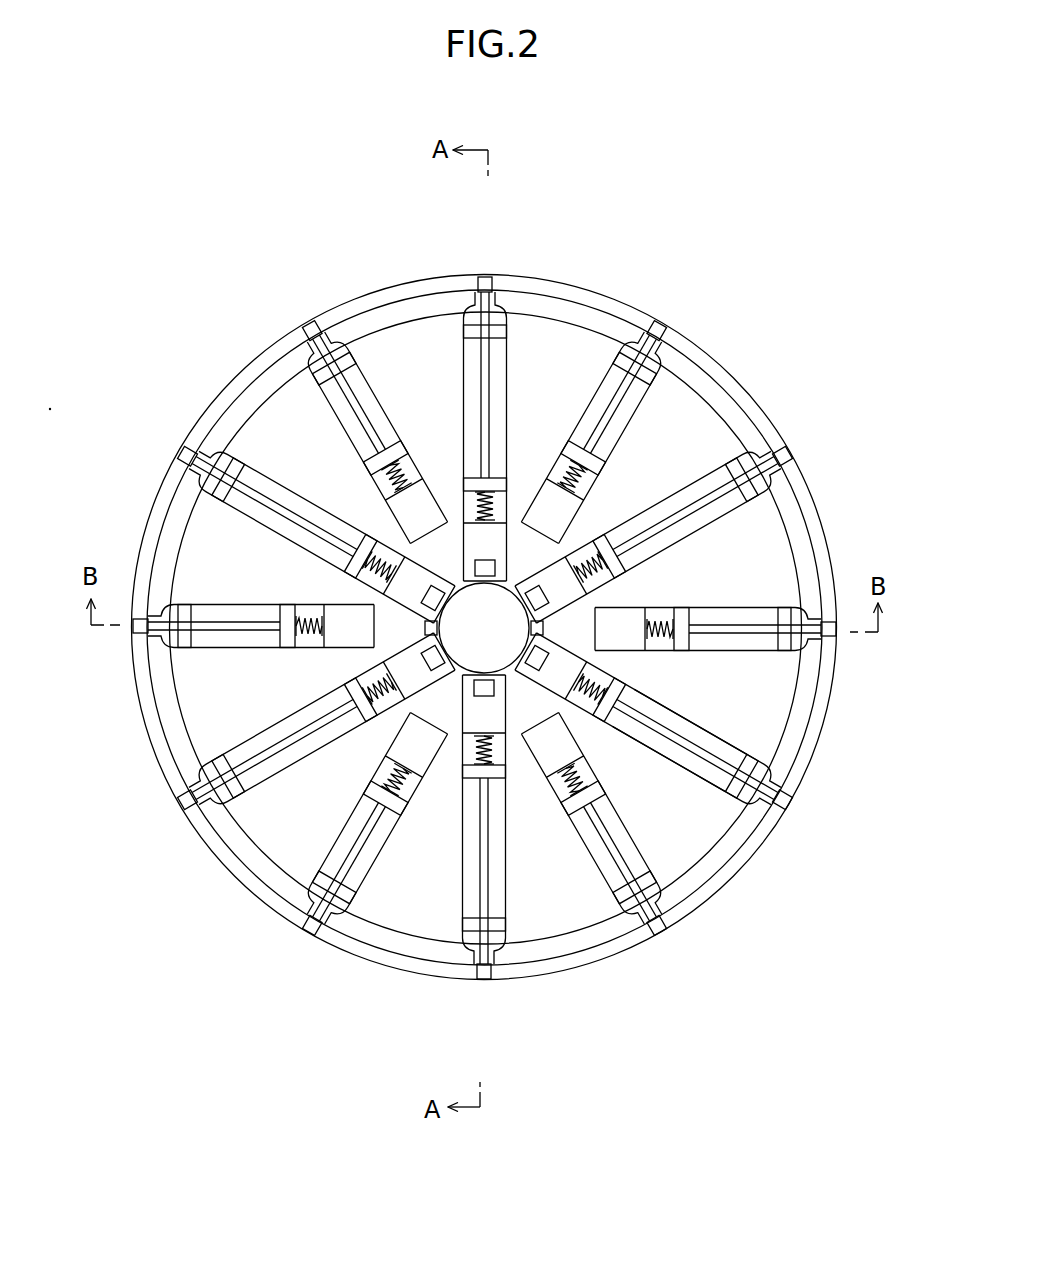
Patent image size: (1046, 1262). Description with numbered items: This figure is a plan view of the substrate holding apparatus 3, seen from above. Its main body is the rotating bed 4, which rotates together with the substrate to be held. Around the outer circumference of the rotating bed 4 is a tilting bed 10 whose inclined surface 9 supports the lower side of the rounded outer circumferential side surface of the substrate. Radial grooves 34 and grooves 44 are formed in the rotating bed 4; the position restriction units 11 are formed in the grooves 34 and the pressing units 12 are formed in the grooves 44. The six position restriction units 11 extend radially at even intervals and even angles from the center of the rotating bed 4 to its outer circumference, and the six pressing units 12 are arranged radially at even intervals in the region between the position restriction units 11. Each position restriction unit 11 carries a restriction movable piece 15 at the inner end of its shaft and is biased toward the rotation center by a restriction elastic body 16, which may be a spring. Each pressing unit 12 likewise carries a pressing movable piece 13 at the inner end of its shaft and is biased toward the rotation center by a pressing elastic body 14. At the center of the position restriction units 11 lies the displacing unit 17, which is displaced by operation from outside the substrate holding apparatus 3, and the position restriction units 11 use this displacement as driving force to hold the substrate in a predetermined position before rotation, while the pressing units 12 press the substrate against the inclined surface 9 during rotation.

The substrate holding apparatus 3 is at (627, 182).
The rotating bed 4 is at (425, 279).
The inclined surface 9 is at (584, 316).
The tilting bed 10 is at (529, 292).
The position restriction unit 11 is at (494, 627).
The pressing unit 12 is at (484, 628).
The pressing movable piece 13 is at (618, 630).
The pressing elastic body 14 is at (660, 637).
The restriction movable piece 15 is at (486, 712).
The restriction elastic body 16 is at (473, 755).
The displacing unit 17 is at (480, 622).
The groove 34 is at (700, 748).
The groove 44 is at (716, 612).